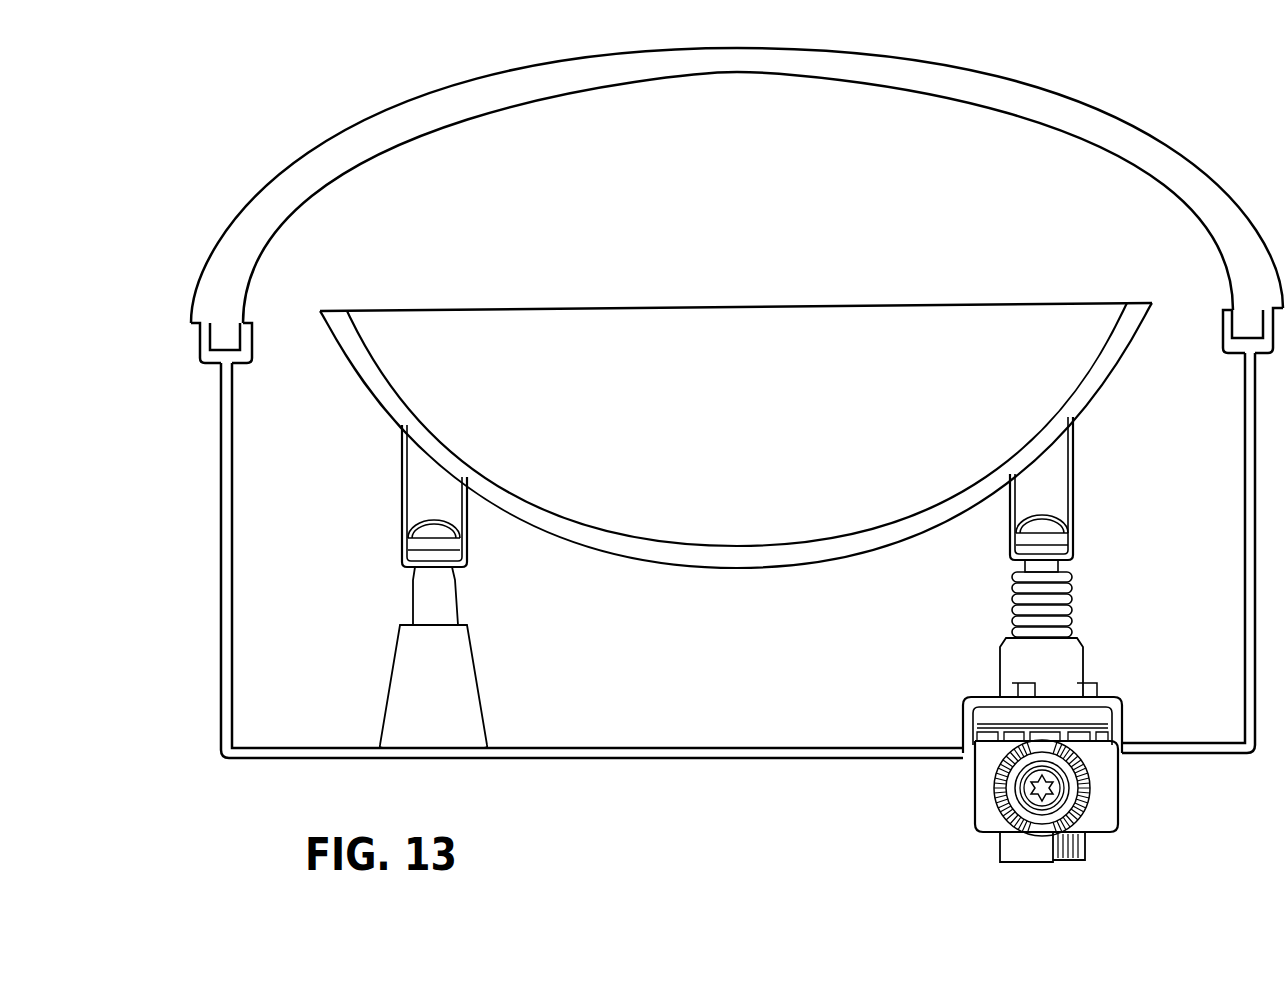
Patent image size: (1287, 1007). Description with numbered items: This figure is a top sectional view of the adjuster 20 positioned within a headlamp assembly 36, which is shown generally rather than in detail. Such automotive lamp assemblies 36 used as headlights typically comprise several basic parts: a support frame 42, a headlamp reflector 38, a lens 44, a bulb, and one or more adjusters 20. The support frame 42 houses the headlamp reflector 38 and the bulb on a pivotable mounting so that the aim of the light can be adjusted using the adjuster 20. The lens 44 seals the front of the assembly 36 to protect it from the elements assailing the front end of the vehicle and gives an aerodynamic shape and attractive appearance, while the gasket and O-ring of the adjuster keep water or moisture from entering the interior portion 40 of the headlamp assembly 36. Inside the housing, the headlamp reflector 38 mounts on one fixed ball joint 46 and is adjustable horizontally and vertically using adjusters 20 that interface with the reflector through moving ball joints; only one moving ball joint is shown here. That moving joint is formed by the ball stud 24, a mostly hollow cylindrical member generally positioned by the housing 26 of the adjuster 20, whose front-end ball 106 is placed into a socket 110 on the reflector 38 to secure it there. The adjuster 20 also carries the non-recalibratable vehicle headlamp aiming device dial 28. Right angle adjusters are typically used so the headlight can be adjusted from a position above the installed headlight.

The headlamp assembly 36 is at (737, 205).
The interior portion 40 is at (1015, 168).
The lens 44 is at (1220, 222).
The support frame 42 is at (221, 707).
The headlamp reflector 38 is at (760, 555).
The fixed ball joint 46 is at (483, 572).
The socket 110 is at (1075, 460).
The ball 106 is at (1053, 545).
The ball stud 24 is at (1089, 604).
The housing 26 is at (1112, 803).
The non-recalibratable vehicle headlamp aiming device dial 28 is at (1000, 810).
The adjuster 20 is at (1064, 764).